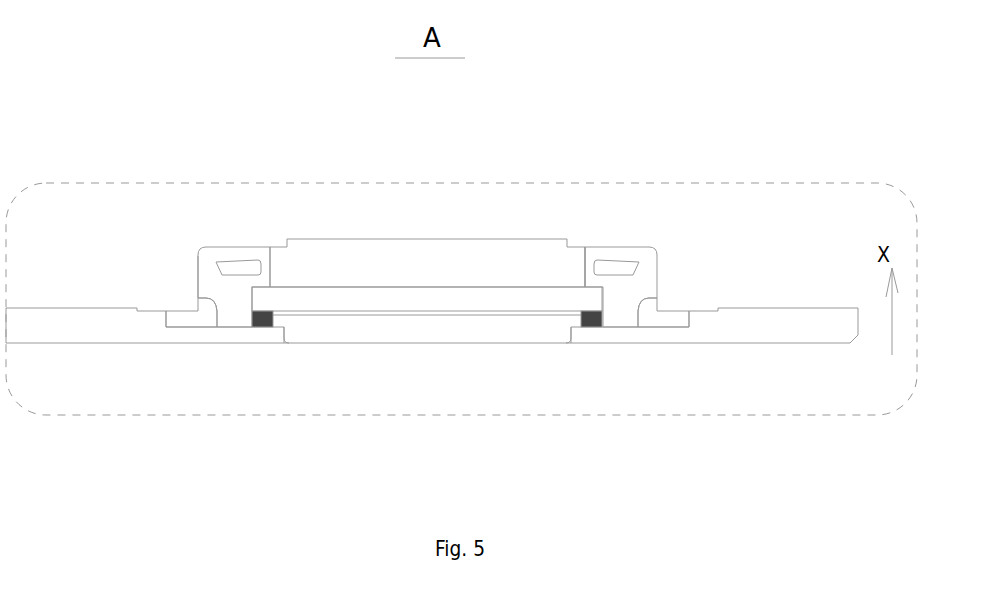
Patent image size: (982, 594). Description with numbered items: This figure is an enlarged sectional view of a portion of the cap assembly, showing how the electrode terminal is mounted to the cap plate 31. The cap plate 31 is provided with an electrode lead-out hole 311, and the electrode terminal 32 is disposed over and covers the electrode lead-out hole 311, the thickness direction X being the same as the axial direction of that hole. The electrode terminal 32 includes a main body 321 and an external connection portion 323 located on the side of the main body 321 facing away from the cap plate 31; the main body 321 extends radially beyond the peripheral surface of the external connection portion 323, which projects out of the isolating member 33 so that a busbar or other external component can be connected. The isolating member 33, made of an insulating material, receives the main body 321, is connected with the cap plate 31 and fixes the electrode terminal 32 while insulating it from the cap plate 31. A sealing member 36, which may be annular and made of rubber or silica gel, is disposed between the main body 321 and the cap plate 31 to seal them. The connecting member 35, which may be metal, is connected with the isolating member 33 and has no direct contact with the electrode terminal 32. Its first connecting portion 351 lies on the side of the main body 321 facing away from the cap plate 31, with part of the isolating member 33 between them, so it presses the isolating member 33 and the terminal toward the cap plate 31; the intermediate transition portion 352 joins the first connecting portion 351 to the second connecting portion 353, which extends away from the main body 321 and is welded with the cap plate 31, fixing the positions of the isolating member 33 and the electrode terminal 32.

The cap plate 31 is at (752, 335).
The electrode lead-out hole 311 is at (447, 330).
The electrode terminal 32 is at (443, 282).
The main body 321 is at (655, 260).
The external connection portion 323 is at (591, 262).
The isolating member 33 is at (233, 307).
The connecting member 35 is at (253, 122).
The first connecting portion 351 is at (240, 266).
The intermediate transition portion 352 is at (197, 308).
The second connecting portion 353 is at (167, 309).
The sealing member 36 is at (263, 327).